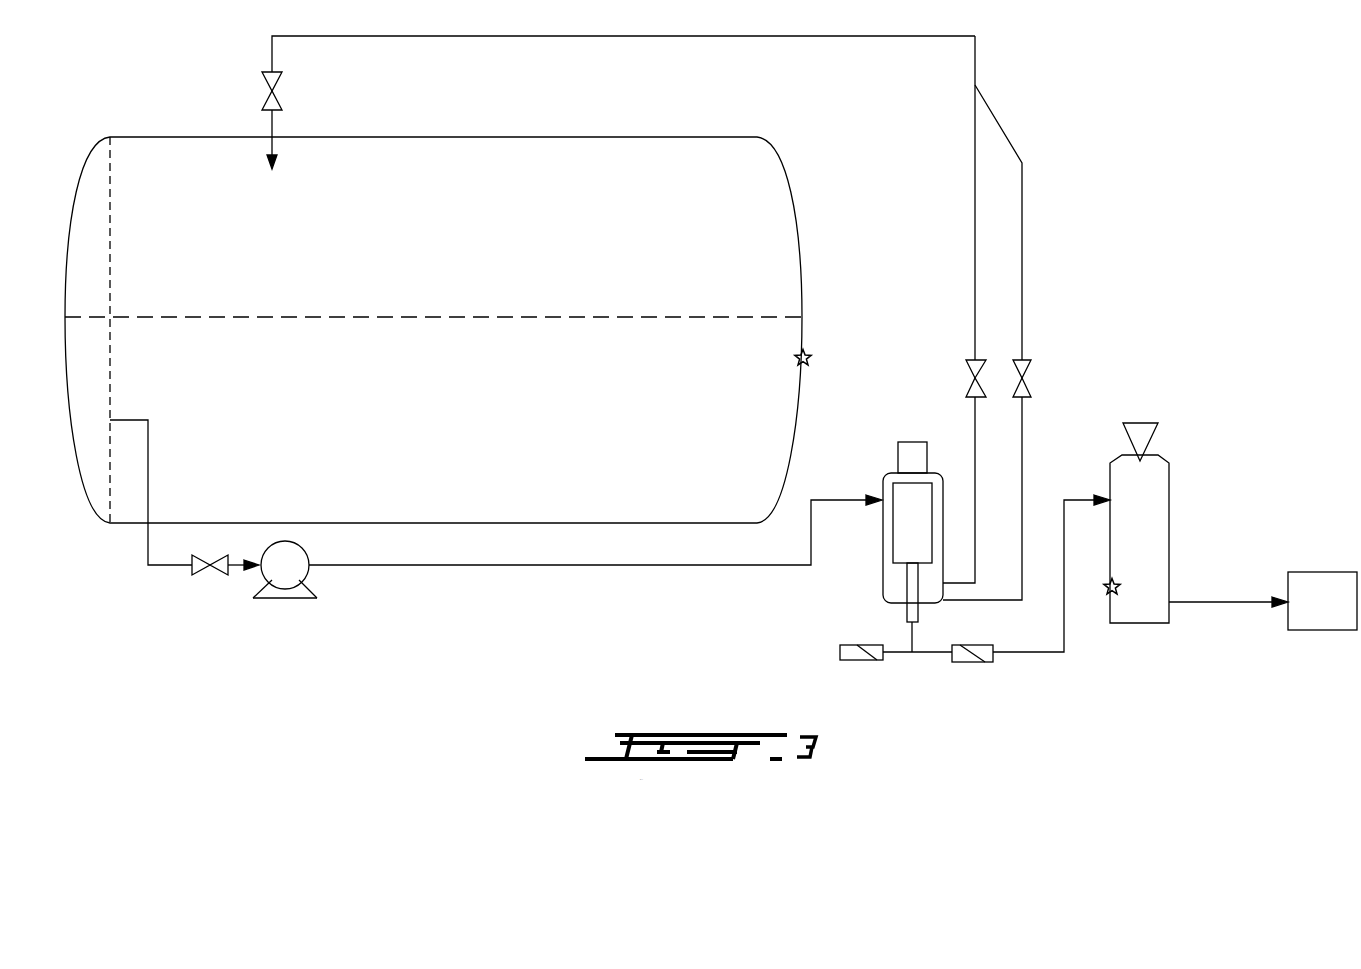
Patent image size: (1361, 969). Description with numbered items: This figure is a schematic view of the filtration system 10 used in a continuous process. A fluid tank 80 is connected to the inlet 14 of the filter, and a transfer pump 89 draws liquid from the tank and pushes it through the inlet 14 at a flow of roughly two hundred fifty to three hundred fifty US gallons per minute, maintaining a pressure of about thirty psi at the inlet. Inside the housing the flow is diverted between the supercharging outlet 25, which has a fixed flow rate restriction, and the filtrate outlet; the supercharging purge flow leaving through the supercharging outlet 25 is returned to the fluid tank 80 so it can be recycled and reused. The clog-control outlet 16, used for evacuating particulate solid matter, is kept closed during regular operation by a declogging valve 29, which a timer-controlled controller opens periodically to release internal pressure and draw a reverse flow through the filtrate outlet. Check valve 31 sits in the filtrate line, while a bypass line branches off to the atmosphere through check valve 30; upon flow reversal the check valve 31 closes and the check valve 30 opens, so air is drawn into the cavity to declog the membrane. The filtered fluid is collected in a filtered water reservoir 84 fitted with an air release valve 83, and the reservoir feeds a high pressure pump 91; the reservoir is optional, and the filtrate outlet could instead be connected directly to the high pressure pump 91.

The fluid tank 80 is at (473, 186).
The inlet 14 is at (622, 568).
The transfer pump 89 is at (277, 600).
The filtration system 10 is at (858, 572).
The check valve 30 is at (860, 661).
The check valve 31 is at (972, 662).
The supercharging outlet 25 is at (975, 205).
The clog-control outlet 16 is at (1022, 232).
The declogging valve 29 is at (1022, 363).
The air release valve 83 is at (1147, 428).
The filtered water reservoir 84 is at (1169, 500).
The high pressure pump 91 is at (1320, 633).